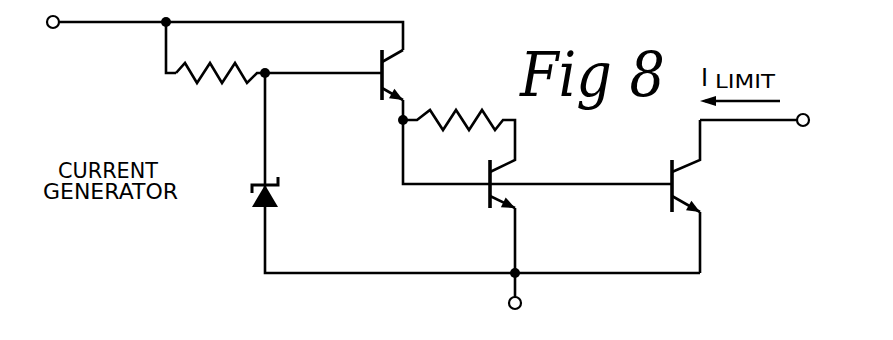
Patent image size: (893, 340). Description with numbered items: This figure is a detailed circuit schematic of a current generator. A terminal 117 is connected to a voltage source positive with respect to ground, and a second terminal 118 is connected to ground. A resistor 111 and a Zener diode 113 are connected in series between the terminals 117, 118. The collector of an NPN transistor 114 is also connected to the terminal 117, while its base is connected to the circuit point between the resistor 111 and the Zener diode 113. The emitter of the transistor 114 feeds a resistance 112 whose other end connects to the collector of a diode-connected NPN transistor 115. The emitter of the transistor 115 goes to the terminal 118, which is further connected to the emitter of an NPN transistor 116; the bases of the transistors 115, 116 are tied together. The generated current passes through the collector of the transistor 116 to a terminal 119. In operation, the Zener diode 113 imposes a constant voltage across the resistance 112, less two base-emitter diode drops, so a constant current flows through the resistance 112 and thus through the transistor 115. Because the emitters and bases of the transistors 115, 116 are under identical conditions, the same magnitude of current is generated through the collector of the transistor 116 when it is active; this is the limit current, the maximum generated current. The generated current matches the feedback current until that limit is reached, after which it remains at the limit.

The resistor 111 is at (187, 76).
The resistance 112 is at (485, 112).
The Zener diode 113 is at (257, 212).
The NPN transistor 114 is at (392, 62).
The diode-connected NPN transistor 115 is at (508, 169).
The NPN transistor 116 is at (705, 211).
The terminal 117 is at (57, 29).
The second terminal 118 is at (543, 292).
The terminal 119 is at (803, 113).